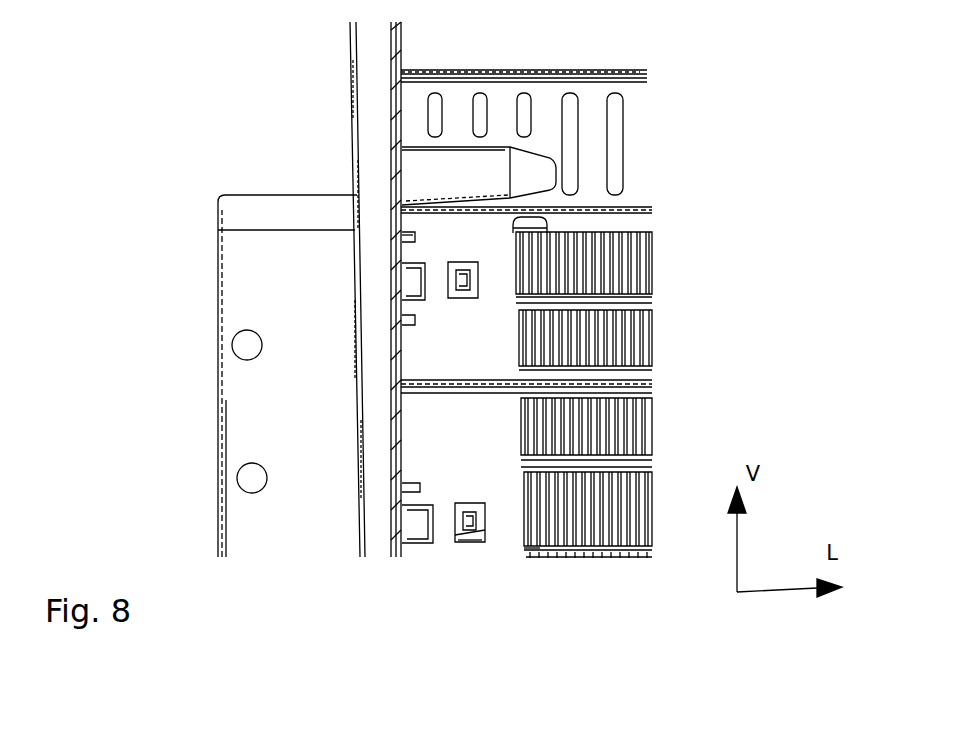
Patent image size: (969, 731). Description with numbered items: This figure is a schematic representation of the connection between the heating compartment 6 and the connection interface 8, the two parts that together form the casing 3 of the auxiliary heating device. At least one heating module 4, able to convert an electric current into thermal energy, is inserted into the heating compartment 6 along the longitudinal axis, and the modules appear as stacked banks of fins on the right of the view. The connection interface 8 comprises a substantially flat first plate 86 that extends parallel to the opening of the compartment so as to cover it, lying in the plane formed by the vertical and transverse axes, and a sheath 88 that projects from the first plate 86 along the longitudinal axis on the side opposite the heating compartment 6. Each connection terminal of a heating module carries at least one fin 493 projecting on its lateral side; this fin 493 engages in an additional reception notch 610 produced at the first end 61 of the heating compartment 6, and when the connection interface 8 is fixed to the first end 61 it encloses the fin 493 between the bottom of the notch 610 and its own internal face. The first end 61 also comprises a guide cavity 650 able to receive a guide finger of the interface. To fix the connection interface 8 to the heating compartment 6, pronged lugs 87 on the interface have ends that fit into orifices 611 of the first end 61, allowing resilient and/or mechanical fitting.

The casing 3 is at (245, 289).
The heating module 4 is at (663, 340).
The heating compartment 6 is at (668, 72).
The connection interface 8 is at (231, 376).
The first plate 86 is at (352, 70).
The sheath 88 is at (223, 505).
The fin 493 is at (397, 235).
The guide cavity 650 is at (470, 157).
The first end 61 is at (523, 565).
The additional reception notch 610 is at (412, 495).
The pronged lug 87 is at (463, 542).
The orifice 611 is at (478, 543).